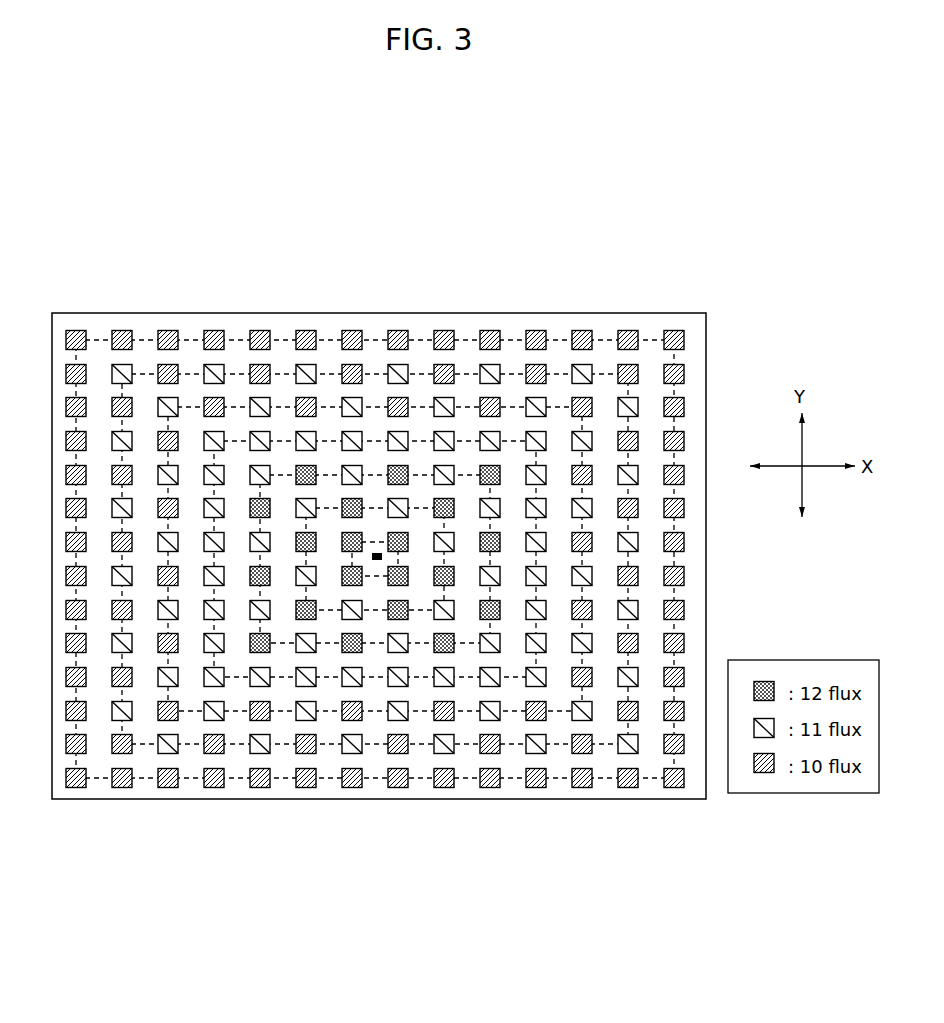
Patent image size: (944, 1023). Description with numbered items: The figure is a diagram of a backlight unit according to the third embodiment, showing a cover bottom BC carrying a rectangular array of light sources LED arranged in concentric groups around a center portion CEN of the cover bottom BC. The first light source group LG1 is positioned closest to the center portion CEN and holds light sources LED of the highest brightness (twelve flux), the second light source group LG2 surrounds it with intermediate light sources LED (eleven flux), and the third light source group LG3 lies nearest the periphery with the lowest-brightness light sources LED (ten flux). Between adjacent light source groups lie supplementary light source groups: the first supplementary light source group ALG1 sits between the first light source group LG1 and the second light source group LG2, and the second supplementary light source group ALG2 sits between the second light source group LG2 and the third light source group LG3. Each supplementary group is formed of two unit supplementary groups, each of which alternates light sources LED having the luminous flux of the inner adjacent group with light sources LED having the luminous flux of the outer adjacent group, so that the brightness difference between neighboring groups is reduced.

The light source LED is at (413, 463).
The cover bottom BC is at (127, 800).
The center portion CEN is at (377, 553).
The first light source group LG1 is at (377, 577).
The second light source group LG2 is at (502, 675).
The third light source group LG3 is at (650, 777).
The first supplementary light source group ALG1 is at (392, 707).
The second supplementary light source group ALG2 is at (389, 684).